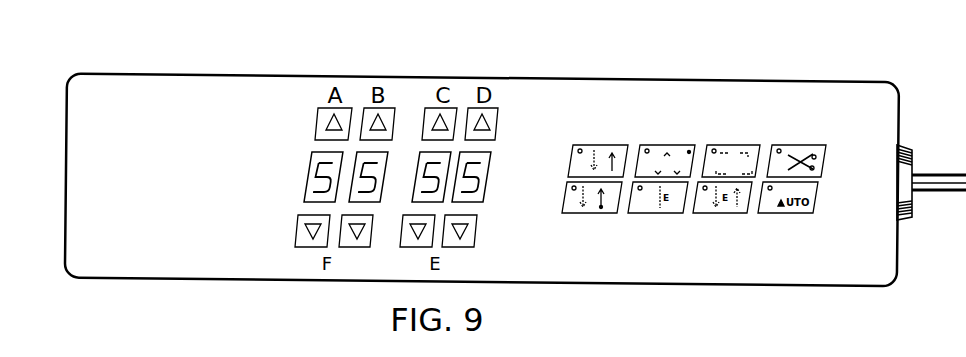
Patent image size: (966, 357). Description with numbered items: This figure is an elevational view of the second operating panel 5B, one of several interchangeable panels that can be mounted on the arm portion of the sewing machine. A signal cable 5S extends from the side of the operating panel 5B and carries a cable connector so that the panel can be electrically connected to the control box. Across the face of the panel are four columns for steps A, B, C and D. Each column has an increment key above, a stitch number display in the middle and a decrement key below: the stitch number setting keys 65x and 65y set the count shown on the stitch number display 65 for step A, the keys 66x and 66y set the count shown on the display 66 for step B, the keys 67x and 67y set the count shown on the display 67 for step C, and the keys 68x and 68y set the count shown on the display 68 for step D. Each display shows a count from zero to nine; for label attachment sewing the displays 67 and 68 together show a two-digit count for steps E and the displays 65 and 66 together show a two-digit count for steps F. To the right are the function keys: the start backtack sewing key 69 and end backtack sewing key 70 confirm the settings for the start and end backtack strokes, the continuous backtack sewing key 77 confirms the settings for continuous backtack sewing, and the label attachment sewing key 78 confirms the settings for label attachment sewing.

The operating panel 5B is at (281, 90).
The signal cable 5S is at (943, 180).
The stitch number display 65 is at (309, 166).
The increment key 65x is at (316, 122).
The decrement key 65y is at (296, 232).
The stitch number display 66 is at (387, 158).
The increment key 66x is at (395, 108).
The decrement key 66y is at (357, 248).
The stitch number display 67 is at (416, 172).
The increment key 67x is at (453, 108).
The decrement key 67y is at (412, 249).
The stitch number display 68 is at (490, 165).
The increment key 68x is at (497, 122).
The decrement key 68y is at (478, 238).
The start backtack sewing key 69 is at (597, 152).
The end backtack sewing key 70 is at (587, 208).
The continuous backtack sewing key 77 is at (658, 147).
The label attachment sewing key 78 is at (718, 147).